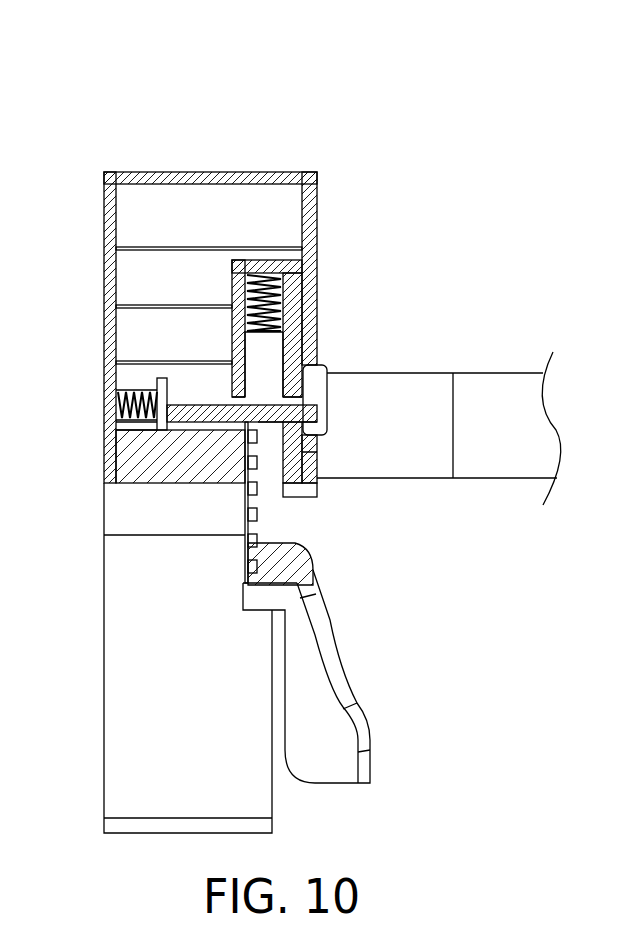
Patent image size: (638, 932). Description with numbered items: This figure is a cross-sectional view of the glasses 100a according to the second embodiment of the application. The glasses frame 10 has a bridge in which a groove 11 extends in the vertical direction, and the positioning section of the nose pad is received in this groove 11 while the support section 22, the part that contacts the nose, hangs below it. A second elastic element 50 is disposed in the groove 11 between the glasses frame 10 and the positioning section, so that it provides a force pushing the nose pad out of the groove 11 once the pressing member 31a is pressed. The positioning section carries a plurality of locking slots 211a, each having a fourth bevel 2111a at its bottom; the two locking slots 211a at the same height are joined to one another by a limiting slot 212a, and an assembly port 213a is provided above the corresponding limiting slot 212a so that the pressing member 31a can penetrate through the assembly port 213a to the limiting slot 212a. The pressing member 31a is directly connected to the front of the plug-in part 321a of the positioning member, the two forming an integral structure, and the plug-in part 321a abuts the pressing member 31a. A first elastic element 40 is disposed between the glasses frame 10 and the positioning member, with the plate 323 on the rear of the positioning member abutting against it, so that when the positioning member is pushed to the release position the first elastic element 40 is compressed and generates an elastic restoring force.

The glasses 100a is at (500, 92).
The glasses frame 10 is at (288, 172).
The groove 11 is at (284, 276).
The second elastic element 50 is at (284, 283).
The assembly port 213a is at (262, 352).
The pressing member 31a is at (317, 368).
The first elastic element 40 is at (118, 400).
The plate 323 is at (160, 412).
The plug-in part 321a is at (200, 445).
The locking slots 211a is at (243, 517).
The limiting slot 212a is at (265, 443).
The fourth bevel 2111a is at (248, 487).
The support section 22 is at (335, 722).